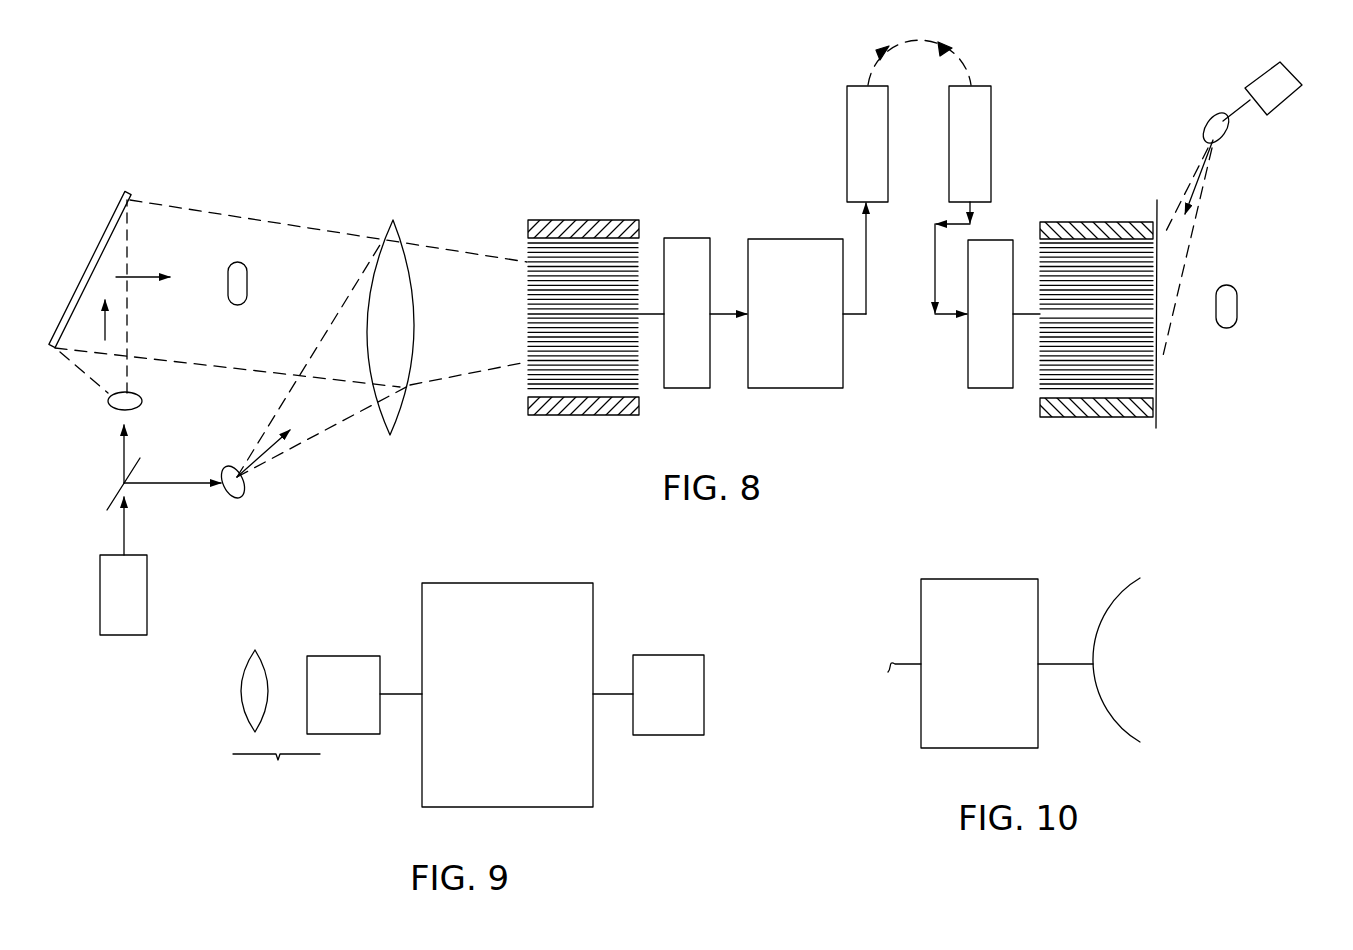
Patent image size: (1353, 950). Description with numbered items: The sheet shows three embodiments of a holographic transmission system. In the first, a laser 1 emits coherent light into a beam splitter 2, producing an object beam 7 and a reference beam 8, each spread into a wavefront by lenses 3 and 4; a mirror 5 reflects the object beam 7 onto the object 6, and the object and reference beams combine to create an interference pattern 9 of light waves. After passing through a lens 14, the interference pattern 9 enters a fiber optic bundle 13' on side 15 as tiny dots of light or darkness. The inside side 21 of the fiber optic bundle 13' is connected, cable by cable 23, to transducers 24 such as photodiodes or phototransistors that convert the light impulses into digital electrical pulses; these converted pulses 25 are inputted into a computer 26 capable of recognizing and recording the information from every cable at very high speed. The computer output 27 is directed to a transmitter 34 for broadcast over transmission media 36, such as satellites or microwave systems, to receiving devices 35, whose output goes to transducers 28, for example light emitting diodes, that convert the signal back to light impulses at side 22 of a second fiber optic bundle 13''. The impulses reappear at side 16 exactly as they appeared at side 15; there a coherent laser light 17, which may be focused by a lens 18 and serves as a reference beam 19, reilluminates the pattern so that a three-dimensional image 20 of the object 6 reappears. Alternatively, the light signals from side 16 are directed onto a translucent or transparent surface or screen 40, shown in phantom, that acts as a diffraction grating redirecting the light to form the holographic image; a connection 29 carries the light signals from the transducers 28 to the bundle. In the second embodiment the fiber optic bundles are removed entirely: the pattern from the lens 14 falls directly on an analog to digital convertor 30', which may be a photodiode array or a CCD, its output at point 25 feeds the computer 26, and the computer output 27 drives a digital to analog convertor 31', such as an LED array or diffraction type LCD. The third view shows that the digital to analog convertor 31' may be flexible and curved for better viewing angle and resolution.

In FIG. 8, the laser 1 is at (100, 620).
In FIG. 8, the beam splitter 2 is at (113, 498).
In FIG. 8, the lens 3 is at (116, 410).
In FIG. 8, the lens 4 is at (237, 498).
In FIG. 8, the mirror 5 is at (101, 237).
In FIG. 8, the object 6 is at (240, 282).
In FIG. 8, the object beam 7 is at (150, 216).
In FIG. 8, the reference beam 8 is at (289, 444).
In FIG. 8, the interference pattern 9 is at (372, 383).
In FIG. 8, the lens 14 is at (385, 236).
In FIG. 9, the lens 14 is at (247, 662).
In FIG. 8, the fiber optic bundle 13' is at (586, 333).
In FIG. 8, the fiber optic bundle 13'' is at (1097, 334).
In FIG. 8, the side of fiber optic bundle 15 is at (527, 375).
In FIG. 8, the side of fiber optic bundle 16 is at (1148, 318).
In FIG. 8, the coherent laser light 17 is at (1286, 104).
In FIG. 8, the lens 18 is at (1206, 124).
In FIG. 8, the reference beam 19 is at (1170, 232).
In FIG. 8, the image 20 is at (1238, 314).
In FIG. 8, the side of fiber optic bundle 21 is at (640, 368).
In FIG. 8, the side of fiber optic bundle 22 is at (1040, 365).
In FIG. 8, the cable 23 is at (652, 310).
In FIG. 8, the transducers 24 is at (698, 389).
In FIG. 8, the converted pulses 25 is at (726, 312).
In FIG. 9, the converted pulses 25 is at (395, 694).
In FIG. 10, the converted pulses 25 is at (898, 662).
In FIG. 8, the computer 26 is at (800, 389).
In FIG. 9, the computer 26 is at (478, 583).
In FIG. 10, the computer 26 is at (990, 558).
In FIG. 8, the computer output 27 is at (866, 222).
In FIG. 9, the computer output 27 is at (603, 694).
In FIG. 10, the computer output 27 is at (1065, 662).
In FIG. 8, the transducers 28 is at (990, 389).
In FIG. 8, the signal line 29 is at (1030, 312).
In FIG. 9, the analog to digital convertor 30' is at (341, 674).
In FIG. 9, the digital to analog convertor 31' is at (668, 670).
In FIG. 10, the digital to analog convertor 31' is at (1105, 670).
In FIG. 8, the transmitter 34 is at (847, 136).
In FIG. 8, the receiving devices 35 is at (991, 150).
In FIG. 8, the transmission media 36 is at (973, 60).
In FIG. 8, the surface or screen 40 is at (1163, 362).